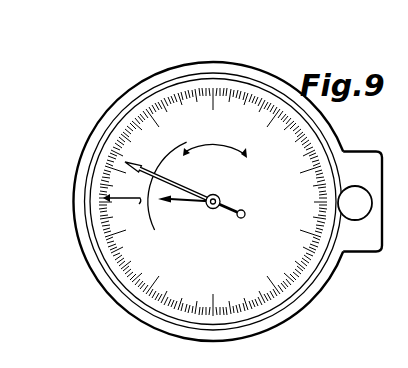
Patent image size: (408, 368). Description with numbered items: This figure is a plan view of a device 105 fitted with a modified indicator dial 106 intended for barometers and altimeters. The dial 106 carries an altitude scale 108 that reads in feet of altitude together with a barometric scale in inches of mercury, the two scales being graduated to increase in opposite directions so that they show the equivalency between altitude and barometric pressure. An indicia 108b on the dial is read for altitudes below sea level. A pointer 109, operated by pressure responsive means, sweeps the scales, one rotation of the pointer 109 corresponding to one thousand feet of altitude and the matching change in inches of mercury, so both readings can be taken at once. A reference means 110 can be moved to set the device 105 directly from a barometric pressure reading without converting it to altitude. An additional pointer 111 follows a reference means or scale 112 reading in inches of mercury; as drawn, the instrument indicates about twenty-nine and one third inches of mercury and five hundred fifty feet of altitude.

The device 105 is at (81, 288).
The modified indicator dial 106 is at (165, 272).
The altitude scale 108 is at (219, 125).
The indicia for altitudes below sea level 108b is at (56, 268).
The pointer 109 is at (220, 192).
The reference means 110 is at (93, 209).
The additional pointer 111 is at (200, 210).
The reference means or scale 112 is at (186, 152).